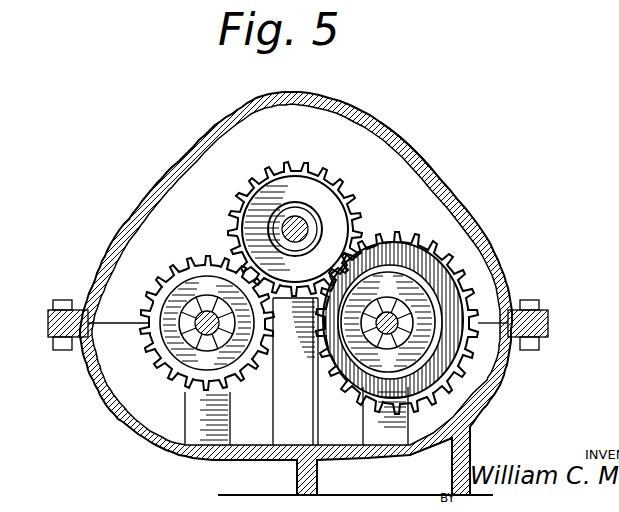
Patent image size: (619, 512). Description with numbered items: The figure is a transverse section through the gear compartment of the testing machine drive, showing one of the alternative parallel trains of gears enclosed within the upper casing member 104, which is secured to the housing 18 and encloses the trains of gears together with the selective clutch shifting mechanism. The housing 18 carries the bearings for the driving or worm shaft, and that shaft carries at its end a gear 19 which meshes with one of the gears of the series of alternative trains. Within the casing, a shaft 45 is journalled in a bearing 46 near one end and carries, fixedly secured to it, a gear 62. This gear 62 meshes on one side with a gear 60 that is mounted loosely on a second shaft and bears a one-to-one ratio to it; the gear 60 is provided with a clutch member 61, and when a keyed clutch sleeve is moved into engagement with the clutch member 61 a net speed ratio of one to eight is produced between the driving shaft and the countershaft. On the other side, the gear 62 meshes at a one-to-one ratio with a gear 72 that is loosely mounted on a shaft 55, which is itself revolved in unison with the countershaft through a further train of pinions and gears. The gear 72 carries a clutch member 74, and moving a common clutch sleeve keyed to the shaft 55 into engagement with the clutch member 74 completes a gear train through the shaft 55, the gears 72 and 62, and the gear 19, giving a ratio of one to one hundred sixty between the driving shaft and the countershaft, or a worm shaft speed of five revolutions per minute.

The housing 18 is at (87, 382).
The upper casing member 104 is at (433, 128).
The gear 62 is at (268, 185).
The shaft 45 is at (283, 227).
The bearing 46 is at (206, 315).
The gear 60 is at (148, 323).
The clutch member 61 is at (193, 312).
The gear 72 is at (416, 237).
The shaft 55 is at (405, 265).
The gear 19 is at (387, 280).
The clutch member 74 is at (398, 317).